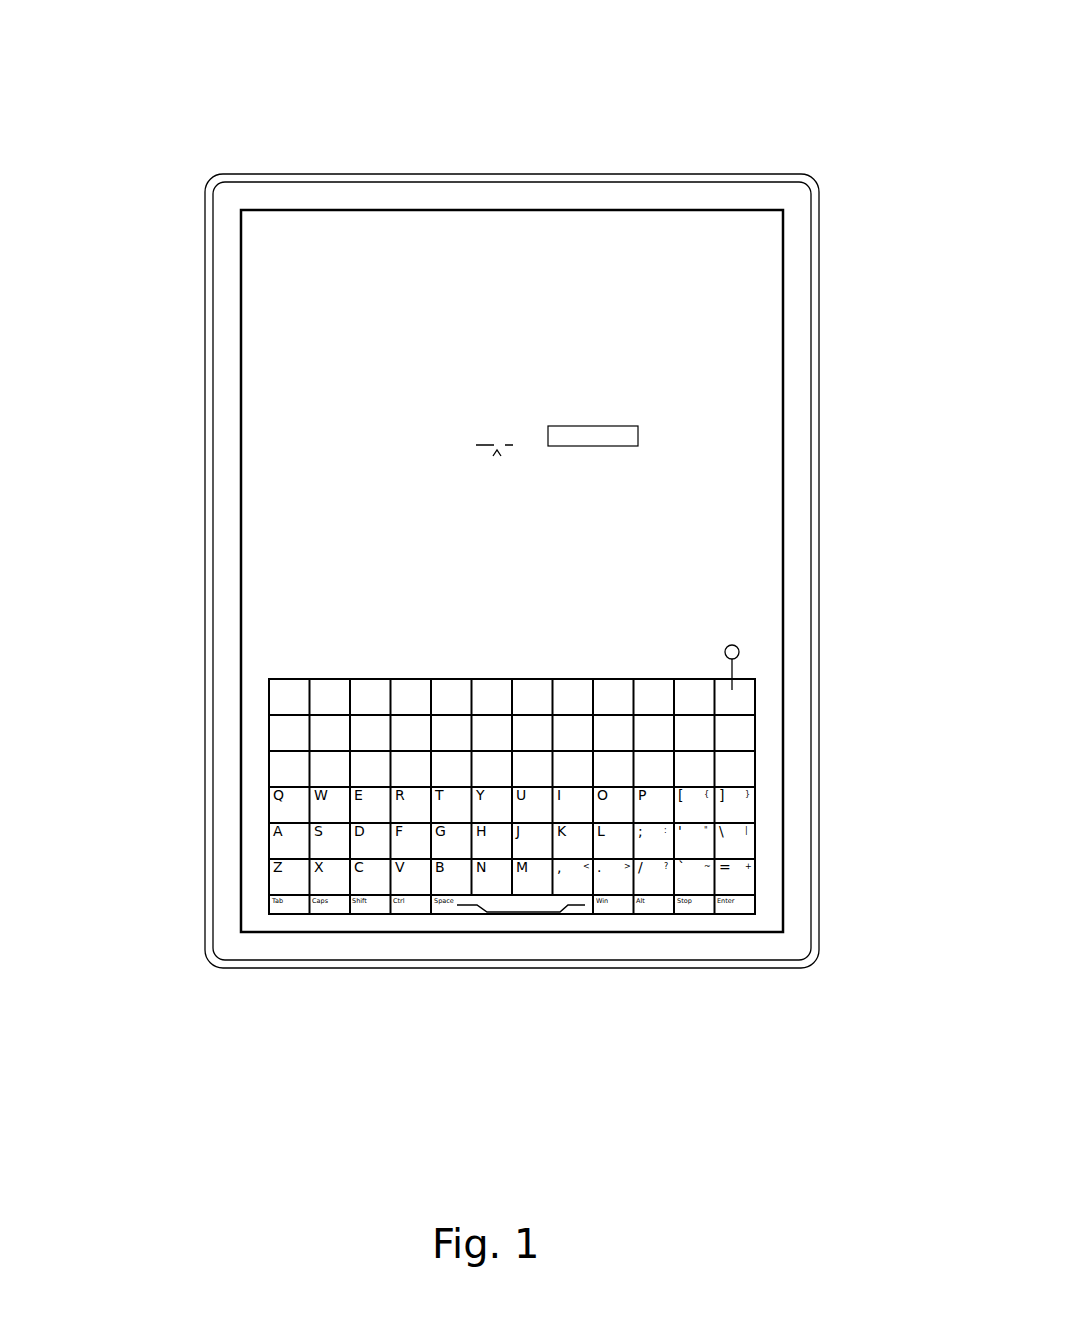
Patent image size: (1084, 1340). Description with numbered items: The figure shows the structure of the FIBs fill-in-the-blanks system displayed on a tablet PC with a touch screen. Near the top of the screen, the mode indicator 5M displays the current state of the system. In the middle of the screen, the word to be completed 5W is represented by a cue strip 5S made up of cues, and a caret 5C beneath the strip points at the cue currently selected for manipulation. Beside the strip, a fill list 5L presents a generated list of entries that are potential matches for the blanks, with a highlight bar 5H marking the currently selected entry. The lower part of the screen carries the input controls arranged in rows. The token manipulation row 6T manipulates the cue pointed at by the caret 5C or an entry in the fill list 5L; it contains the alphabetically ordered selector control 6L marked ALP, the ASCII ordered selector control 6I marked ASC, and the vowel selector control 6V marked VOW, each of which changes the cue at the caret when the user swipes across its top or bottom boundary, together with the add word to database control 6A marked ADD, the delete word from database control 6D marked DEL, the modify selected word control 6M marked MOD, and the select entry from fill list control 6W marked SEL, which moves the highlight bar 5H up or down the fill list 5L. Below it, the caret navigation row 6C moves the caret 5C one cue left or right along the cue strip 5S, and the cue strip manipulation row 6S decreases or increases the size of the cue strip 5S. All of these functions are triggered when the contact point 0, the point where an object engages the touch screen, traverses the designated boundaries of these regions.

The mode indicator 5M is at (267, 228).
The cue strip 5S is at (492, 418).
The word to be completed 5W is at (526, 418).
The caret 5C is at (492, 454).
The highlight bar 5H is at (607, 423).
The fill list 5L is at (628, 465).
The token manipulation row 6T is at (412, 702).
The caret navigation row 6C is at (410, 731).
The cue strip manipulation row 6S is at (412, 768).
The alphabetically ordered selector control 6L is at (497, 678).
The ASCII ordered selector control 6I is at (535, 678).
The vowel selector control 6V is at (576, 678).
The add word to database control 6A is at (613, 717).
The delete word from database control 6D is at (654, 717).
The modify selected word control 6M is at (694, 717).
The select entry from fill list control 6W is at (735, 717).
The contact point 0 is at (740, 649).